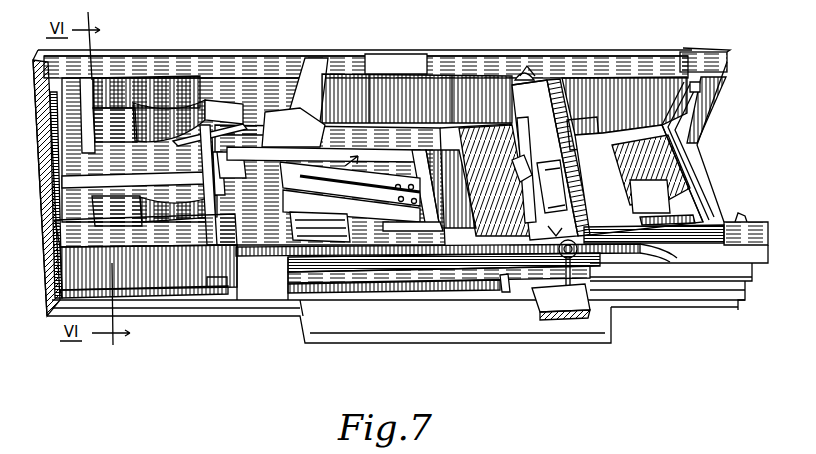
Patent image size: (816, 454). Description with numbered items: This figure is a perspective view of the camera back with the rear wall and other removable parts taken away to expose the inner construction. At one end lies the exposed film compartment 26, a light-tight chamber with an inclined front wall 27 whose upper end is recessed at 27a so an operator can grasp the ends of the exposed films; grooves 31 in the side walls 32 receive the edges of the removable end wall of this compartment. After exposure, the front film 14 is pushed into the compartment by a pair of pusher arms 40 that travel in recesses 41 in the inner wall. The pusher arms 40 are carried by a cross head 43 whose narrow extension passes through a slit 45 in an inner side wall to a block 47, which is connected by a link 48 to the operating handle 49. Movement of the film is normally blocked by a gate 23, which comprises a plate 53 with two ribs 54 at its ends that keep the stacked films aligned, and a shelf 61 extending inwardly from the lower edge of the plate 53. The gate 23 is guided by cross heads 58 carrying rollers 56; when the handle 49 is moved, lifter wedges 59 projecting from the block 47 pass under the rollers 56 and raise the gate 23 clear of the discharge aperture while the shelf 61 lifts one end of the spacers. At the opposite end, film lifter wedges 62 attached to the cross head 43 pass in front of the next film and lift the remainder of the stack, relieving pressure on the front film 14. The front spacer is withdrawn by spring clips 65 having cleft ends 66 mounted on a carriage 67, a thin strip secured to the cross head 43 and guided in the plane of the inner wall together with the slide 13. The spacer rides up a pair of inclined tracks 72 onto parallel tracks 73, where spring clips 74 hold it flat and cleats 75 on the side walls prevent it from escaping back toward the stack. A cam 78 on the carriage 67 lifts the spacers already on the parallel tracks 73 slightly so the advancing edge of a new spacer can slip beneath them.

The slide 13 is at (474, 151).
The front film 14 is at (470, 184).
The gate 23 is at (537, 70).
The exposed film compartment 26 is at (662, 166).
The inclined front wall 27 is at (690, 156).
The recess 27a is at (686, 184).
The grooves 31 is at (700, 93).
The side walls 32 is at (657, 78).
The pusher arms 40 is at (432, 172).
The recesses 41 is at (350, 176).
The cross head 43 is at (210, 178).
The slit 45 is at (185, 270).
The block 47 is at (270, 290).
The link 48 is at (410, 290).
The operating handle 49 is at (538, 306).
The plate 53 is at (545, 114).
The ribs 54 is at (518, 118).
The rollers 56 is at (519, 72).
The cross heads 58 is at (524, 72).
The lifter wedges 59 is at (652, 245).
The shelf 61 is at (522, 145).
The film lifter wedges 62 is at (458, 130).
The spring clips 65 is at (322, 175).
The cleft ends 66 is at (262, 158).
The carriage 67 is at (432, 215).
The inclined tracks 72 is at (522, 166).
The parallel tracks 73 is at (108, 105).
The spring clips 74 is at (176, 108).
The cleats 75 is at (300, 84).
The cam 78 is at (232, 158).